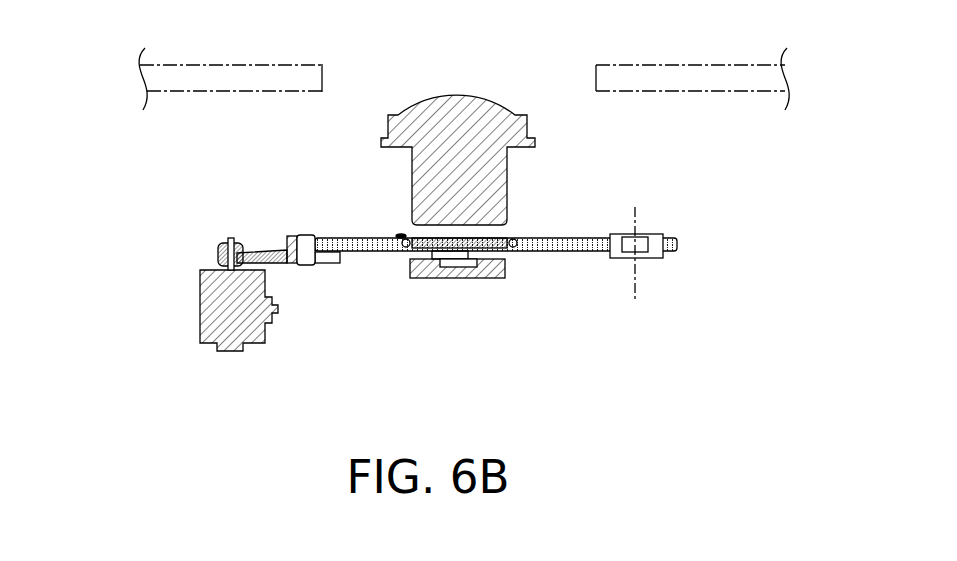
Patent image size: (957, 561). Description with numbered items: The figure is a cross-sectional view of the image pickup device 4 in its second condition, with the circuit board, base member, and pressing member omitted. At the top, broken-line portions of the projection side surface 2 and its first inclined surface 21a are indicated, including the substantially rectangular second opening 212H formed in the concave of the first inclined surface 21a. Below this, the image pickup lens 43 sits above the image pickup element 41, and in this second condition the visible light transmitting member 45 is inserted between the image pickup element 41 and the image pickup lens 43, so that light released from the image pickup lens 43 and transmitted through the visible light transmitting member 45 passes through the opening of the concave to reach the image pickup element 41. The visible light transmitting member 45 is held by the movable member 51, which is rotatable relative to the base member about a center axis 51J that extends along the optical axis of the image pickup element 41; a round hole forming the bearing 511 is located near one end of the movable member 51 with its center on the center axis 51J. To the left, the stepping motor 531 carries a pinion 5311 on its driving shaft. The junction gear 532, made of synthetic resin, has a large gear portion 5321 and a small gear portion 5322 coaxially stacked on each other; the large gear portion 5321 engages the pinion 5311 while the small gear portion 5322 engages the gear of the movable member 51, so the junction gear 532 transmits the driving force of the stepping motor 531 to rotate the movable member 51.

The projection side surface 2 is at (732, 72).
The first inclined surface 21a is at (238, 63).
The second opening 212H is at (323, 77).
The image pickup device 4 is at (457, 125).
The image pickup lens 43 is at (460, 110).
The visible light transmitting member 45 is at (420, 235).
The image pickup element 41 is at (483, 271).
The movable member 51 is at (570, 237).
The bearing 511 is at (643, 242).
The center axis 51J is at (638, 283).
The stepping motor 531 is at (198, 312).
The pinion 5311 is at (217, 257).
The junction gear 532 is at (334, 319).
The large gear portion 5321 is at (240, 265).
The small gear portion 5322 is at (262, 266).